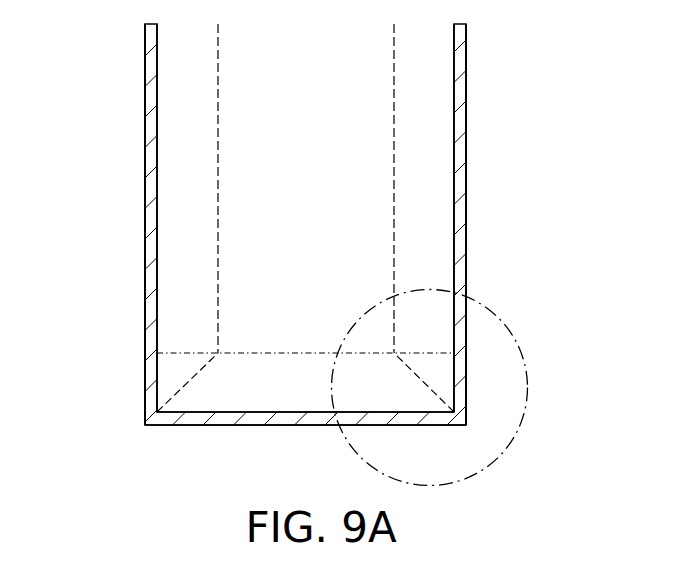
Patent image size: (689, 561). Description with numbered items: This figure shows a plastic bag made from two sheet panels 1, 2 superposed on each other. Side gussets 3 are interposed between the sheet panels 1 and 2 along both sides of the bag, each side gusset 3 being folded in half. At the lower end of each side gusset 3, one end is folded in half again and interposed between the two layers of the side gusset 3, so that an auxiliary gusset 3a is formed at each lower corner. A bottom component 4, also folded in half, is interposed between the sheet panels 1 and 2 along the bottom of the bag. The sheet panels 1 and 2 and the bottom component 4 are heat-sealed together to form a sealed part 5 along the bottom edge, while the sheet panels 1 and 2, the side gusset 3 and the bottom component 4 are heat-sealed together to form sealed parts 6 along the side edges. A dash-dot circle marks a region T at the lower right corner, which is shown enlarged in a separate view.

The sheet panel 1 is at (240, 180).
The sheet panel 2 is at (245, 230).
The side gusset 3 is at (182, 125).
The auxiliary gusset 3a is at (167, 377).
The bottom component 4 is at (277, 390).
The sealed part 5 is at (218, 426).
The sealed parts 6 is at (148, 302).
The region T is at (520, 340).